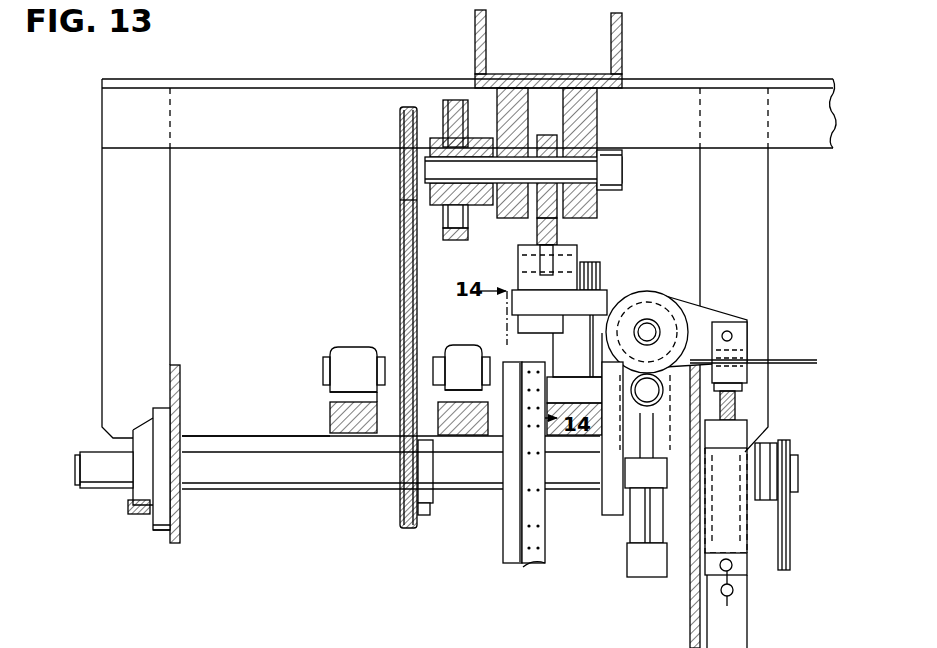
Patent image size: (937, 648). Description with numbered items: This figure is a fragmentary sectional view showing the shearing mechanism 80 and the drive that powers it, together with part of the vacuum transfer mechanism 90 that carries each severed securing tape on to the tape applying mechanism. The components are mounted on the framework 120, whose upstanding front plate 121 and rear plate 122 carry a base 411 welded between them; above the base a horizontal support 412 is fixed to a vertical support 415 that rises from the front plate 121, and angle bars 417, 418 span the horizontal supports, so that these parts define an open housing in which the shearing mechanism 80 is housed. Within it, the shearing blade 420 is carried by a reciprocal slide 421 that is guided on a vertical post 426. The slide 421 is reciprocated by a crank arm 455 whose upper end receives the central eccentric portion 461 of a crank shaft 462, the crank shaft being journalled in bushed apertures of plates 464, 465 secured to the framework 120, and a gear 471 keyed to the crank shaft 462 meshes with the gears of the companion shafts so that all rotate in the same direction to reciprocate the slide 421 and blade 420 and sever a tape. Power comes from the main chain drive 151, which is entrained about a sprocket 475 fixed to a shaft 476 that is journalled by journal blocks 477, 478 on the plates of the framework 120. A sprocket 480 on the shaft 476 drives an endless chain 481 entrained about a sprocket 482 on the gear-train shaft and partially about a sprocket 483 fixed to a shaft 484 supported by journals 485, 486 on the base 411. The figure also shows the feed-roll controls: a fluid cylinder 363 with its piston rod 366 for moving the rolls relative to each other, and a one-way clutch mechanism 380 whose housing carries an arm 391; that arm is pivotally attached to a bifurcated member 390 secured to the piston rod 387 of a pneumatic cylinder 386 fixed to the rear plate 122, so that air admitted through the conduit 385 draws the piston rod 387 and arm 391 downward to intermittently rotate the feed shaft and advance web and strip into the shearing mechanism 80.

The shearing mechanism 80 is at (670, 212).
The vacuum transfer mechanism 90 is at (526, 566).
The framework 120 is at (778, 82).
The front plate 121 is at (182, 526).
The rear plate 122 is at (690, 644).
The main chain drive 151 is at (790, 548).
The fluid cylinder 363 is at (646, 566).
The piston rod 366 is at (640, 448).
The clutch mechanism 380 is at (685, 292).
The conduit 385 is at (728, 570).
The pneumatic cylinder 386 is at (739, 538).
The piston rod 387 is at (735, 406).
The bifurcated member 390 is at (745, 360).
The arm 391 is at (706, 318).
The base 411 is at (264, 418).
The horizontal support 412 is at (304, 132).
The vertical support 415 is at (136, 249).
The angle bar 417 is at (623, 50).
The angle bar 418 is at (493, 54).
The shearing blade 420 is at (559, 345).
The reciprocal slide 421 is at (528, 300).
The vertical post 426 is at (585, 263).
The crank arm 455 is at (555, 232).
The central eccentric portion 461 is at (545, 158).
The crank shaft 462 is at (618, 174).
The plate 464 is at (520, 110).
The plate 465 is at (600, 128).
The gear 471 is at (450, 100).
The sprocket 475 is at (770, 445).
The shaft 476 is at (324, 476).
The journal block 477 is at (146, 518).
The journal block 478 is at (717, 520).
The sprocket 480 is at (425, 458).
The endless chain 481 is at (400, 272).
The sprocket 482 is at (400, 170).
The sprocket 483 is at (434, 350).
The shaft 484 is at (378, 361).
The journal 485 is at (344, 364).
The journal 486 is at (460, 364).